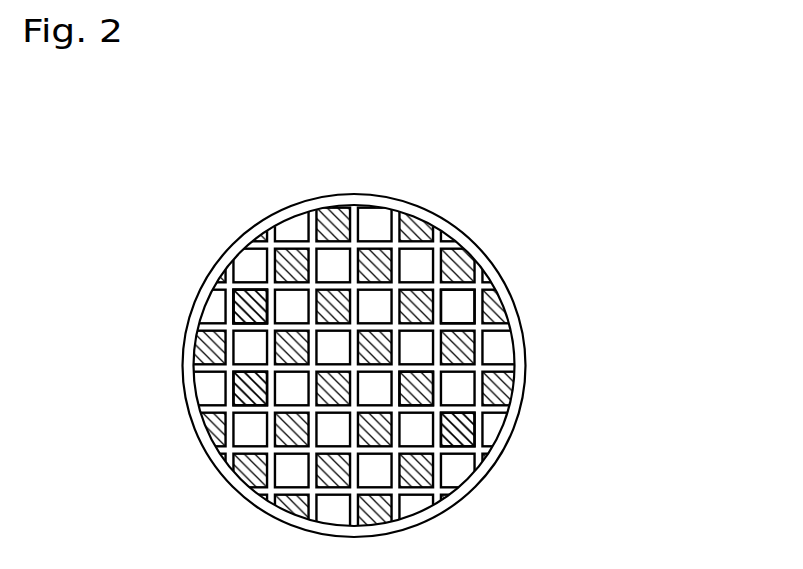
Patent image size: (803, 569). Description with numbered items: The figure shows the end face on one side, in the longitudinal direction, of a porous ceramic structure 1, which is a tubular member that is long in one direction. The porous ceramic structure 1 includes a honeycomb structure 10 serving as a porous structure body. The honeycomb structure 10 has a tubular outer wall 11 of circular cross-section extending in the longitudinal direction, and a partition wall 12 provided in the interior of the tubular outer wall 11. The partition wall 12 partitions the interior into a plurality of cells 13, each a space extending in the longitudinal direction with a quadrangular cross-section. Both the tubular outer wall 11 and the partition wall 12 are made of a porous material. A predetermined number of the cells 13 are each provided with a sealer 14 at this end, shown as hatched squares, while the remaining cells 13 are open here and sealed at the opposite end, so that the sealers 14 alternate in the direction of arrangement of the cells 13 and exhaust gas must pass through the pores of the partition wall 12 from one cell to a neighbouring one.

The porous ceramic structure 1 is at (232, 131).
The honeycomb structure 10 is at (402, 180).
The tubular outer wall 11 is at (452, 237).
The partition wall 12 is at (475, 284).
The cell 13 is at (248, 308).
The sealer 14 is at (252, 302).